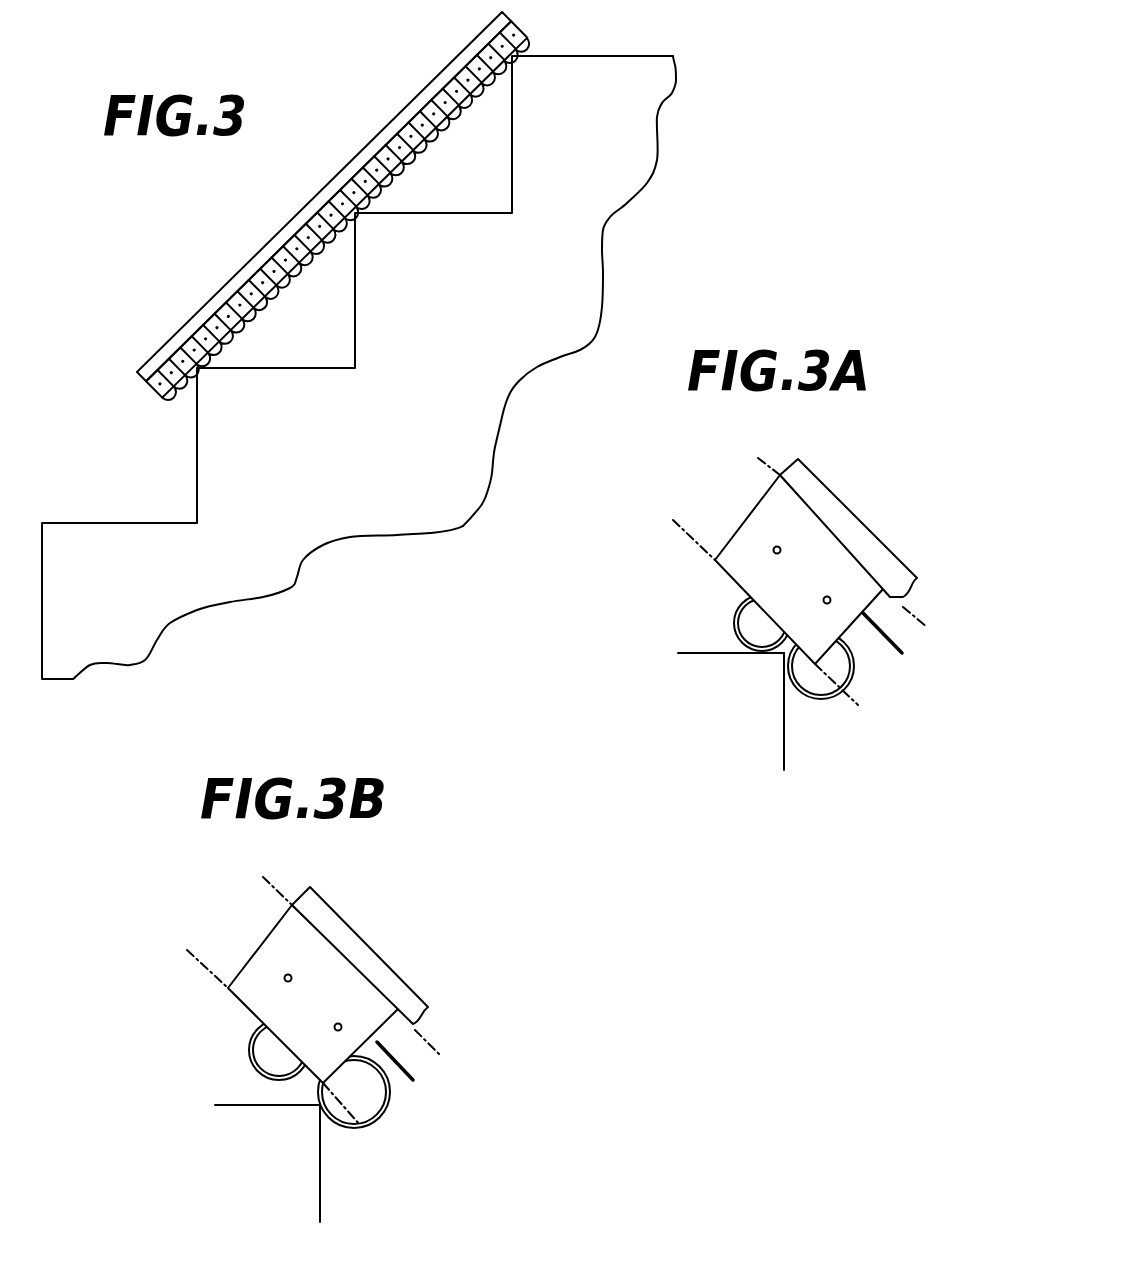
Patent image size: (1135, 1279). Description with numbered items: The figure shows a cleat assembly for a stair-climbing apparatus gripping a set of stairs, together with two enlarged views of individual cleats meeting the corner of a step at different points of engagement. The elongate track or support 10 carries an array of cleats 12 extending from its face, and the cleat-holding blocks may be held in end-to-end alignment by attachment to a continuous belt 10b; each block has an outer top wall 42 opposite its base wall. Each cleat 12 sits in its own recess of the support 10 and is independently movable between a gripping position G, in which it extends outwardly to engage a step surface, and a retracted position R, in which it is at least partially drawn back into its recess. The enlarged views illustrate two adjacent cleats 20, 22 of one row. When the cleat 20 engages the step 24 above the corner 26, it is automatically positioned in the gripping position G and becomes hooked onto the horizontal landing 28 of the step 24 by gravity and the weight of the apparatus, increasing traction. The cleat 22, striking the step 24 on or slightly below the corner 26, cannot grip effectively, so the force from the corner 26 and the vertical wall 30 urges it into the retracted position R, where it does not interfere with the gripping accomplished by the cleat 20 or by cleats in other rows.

In FIG. 3, the track or support 10 is at (363, 167).
In FIG. 3A, the track or support 10 is at (807, 521).
In FIG. 3B, the track or support 10 is at (327, 968).
In FIG. 3, the belt 10b is at (393, 115).
In FIG. 3A, the belt 10b is at (865, 541).
In FIG. 3B, the belt 10b is at (398, 985).
In FIG. 3, the cleats 12 is at (247, 320).
In FIG. 3A, the cleat 20 is at (760, 633).
In FIG. 3B, the cleat 20 is at (263, 1045).
In FIG. 3A, the cleat 22 is at (846, 683).
In FIG. 3B, the cleat 22 is at (373, 1108).
In FIG. 3, the step 24 is at (459, 469).
In FIG. 3A, the step 24 is at (757, 702).
In FIG. 3A, the corner 26 is at (778, 669).
In FIG. 3B, the corner 26 is at (320, 1112).
In FIG. 3A, the horizontal landing 28 is at (702, 653).
In FIG. 3B, the horizontal landing 28 is at (236, 1104).
In FIG. 3A, the vertical wall 30 is at (790, 727).
In FIG. 3B, the vertical wall 30 is at (327, 1204).
In FIG. 3A, the outer top wall 42 is at (720, 571).
In FIG. 3B, the outer top wall 42 is at (239, 1006).
In FIG. 3A, the gripping position G is at (718, 605).
In FIG. 3B, the retracted position R is at (415, 1104).